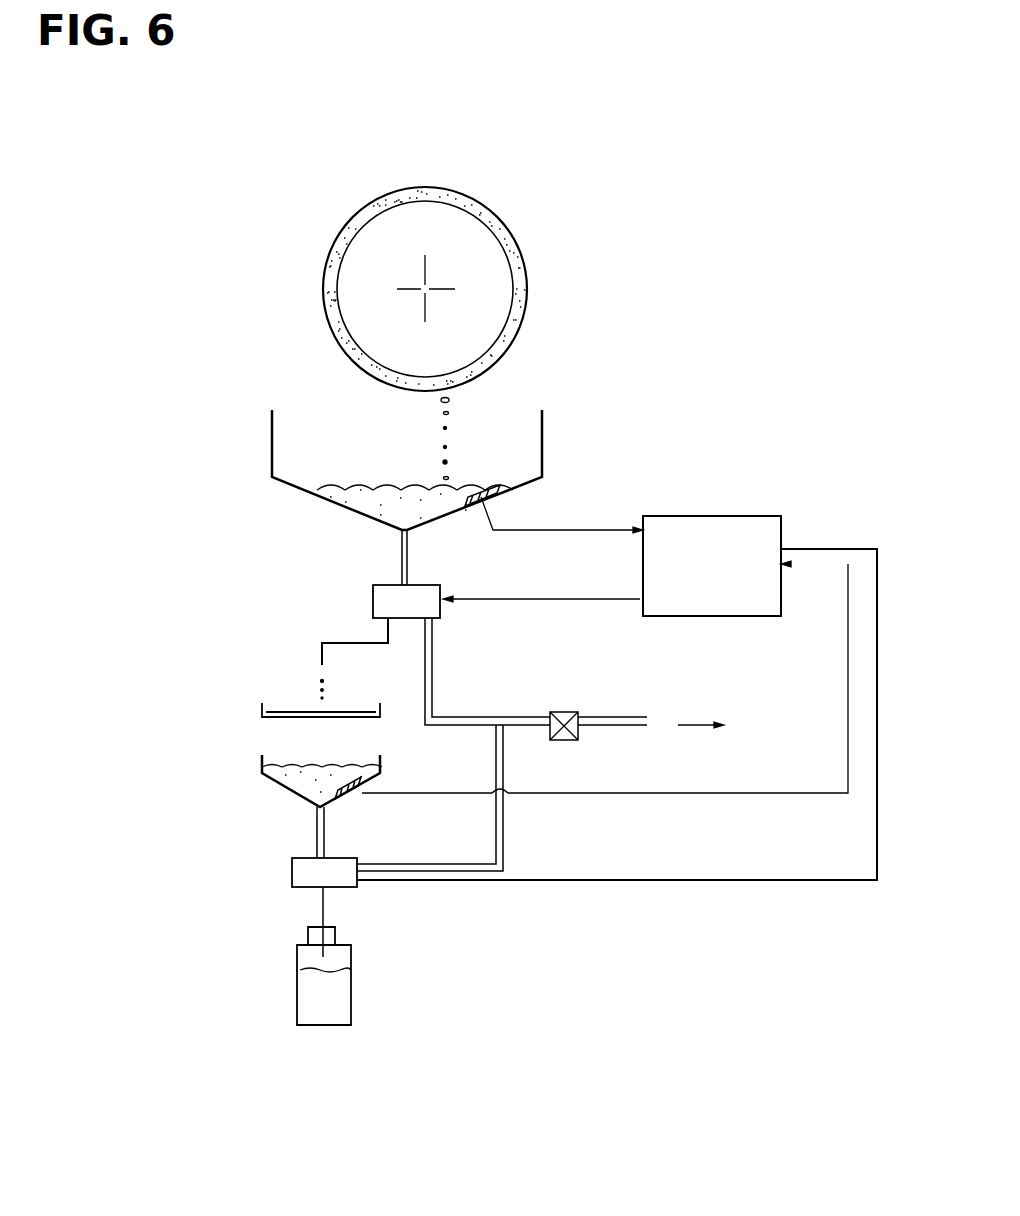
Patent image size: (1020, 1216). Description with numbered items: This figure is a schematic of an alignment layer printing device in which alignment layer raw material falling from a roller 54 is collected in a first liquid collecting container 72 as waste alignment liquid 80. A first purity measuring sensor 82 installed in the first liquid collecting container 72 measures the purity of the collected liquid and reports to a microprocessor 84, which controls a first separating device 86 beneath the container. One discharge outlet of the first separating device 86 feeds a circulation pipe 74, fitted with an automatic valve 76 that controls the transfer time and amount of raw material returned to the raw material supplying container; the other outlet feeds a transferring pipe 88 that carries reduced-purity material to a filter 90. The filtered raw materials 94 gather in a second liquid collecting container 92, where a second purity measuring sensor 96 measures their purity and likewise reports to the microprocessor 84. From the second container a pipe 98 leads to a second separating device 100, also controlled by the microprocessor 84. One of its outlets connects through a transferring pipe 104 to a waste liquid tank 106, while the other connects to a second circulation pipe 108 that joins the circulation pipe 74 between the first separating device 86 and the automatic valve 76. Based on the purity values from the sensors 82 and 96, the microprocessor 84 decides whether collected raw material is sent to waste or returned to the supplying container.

The photoreceptor drum 54 is at (475, 248).
The first liquid collecting container 72 is at (545, 437).
The circulation pipe 74 is at (432, 662).
The automatic valve 76 is at (562, 712).
The waste alignment liquid 80 is at (375, 495).
The first purity measuring sensor 82 is at (481, 488).
The microprocessor 84 is at (695, 516).
The first separating device 86 is at (385, 590).
The transferring pipe 88 is at (320, 660).
The filter 90 is at (262, 708).
The second liquid collecting container 92 is at (262, 765).
The filtered raw materials 94 is at (302, 782).
The second purity measuring sensor 96 is at (345, 780).
The second pipe 98 is at (325, 840).
The second separating device 100 is at (292, 884).
The transferring pipe 104 is at (325, 903).
The waste liquid tank 106 is at (352, 1005).
The second circulation pipe 108 is at (503, 836).